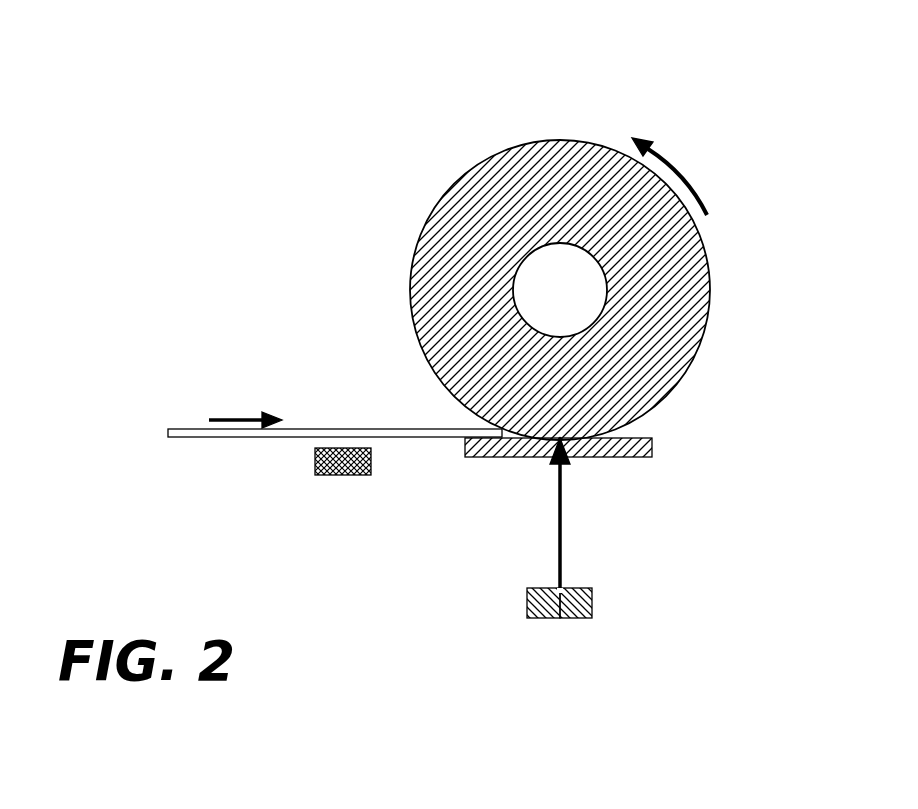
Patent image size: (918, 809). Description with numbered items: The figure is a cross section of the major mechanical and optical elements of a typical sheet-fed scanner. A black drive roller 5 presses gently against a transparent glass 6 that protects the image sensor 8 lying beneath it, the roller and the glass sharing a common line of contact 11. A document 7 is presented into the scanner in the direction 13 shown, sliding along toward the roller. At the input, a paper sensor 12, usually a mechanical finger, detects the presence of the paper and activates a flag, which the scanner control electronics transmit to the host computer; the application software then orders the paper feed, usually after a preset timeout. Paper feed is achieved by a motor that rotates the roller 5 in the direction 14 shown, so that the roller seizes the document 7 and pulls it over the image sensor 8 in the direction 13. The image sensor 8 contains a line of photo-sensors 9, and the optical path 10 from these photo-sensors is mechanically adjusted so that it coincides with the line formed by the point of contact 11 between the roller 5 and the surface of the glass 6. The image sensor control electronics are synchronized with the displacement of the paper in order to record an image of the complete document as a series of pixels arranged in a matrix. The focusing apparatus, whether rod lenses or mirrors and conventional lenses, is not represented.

The drive roller 5 is at (515, 148).
The transparent glass 6 is at (643, 457).
The document 7 is at (427, 435).
The image sensor 8 is at (528, 617).
The line of photo-sensors 9 is at (563, 618).
The optical path 10 is at (555, 515).
The line of contact 11 is at (563, 440).
The paper sensor 12 is at (315, 463).
The direction of document feed 13 is at (225, 413).
The direction of roller rotation 14 is at (677, 158).